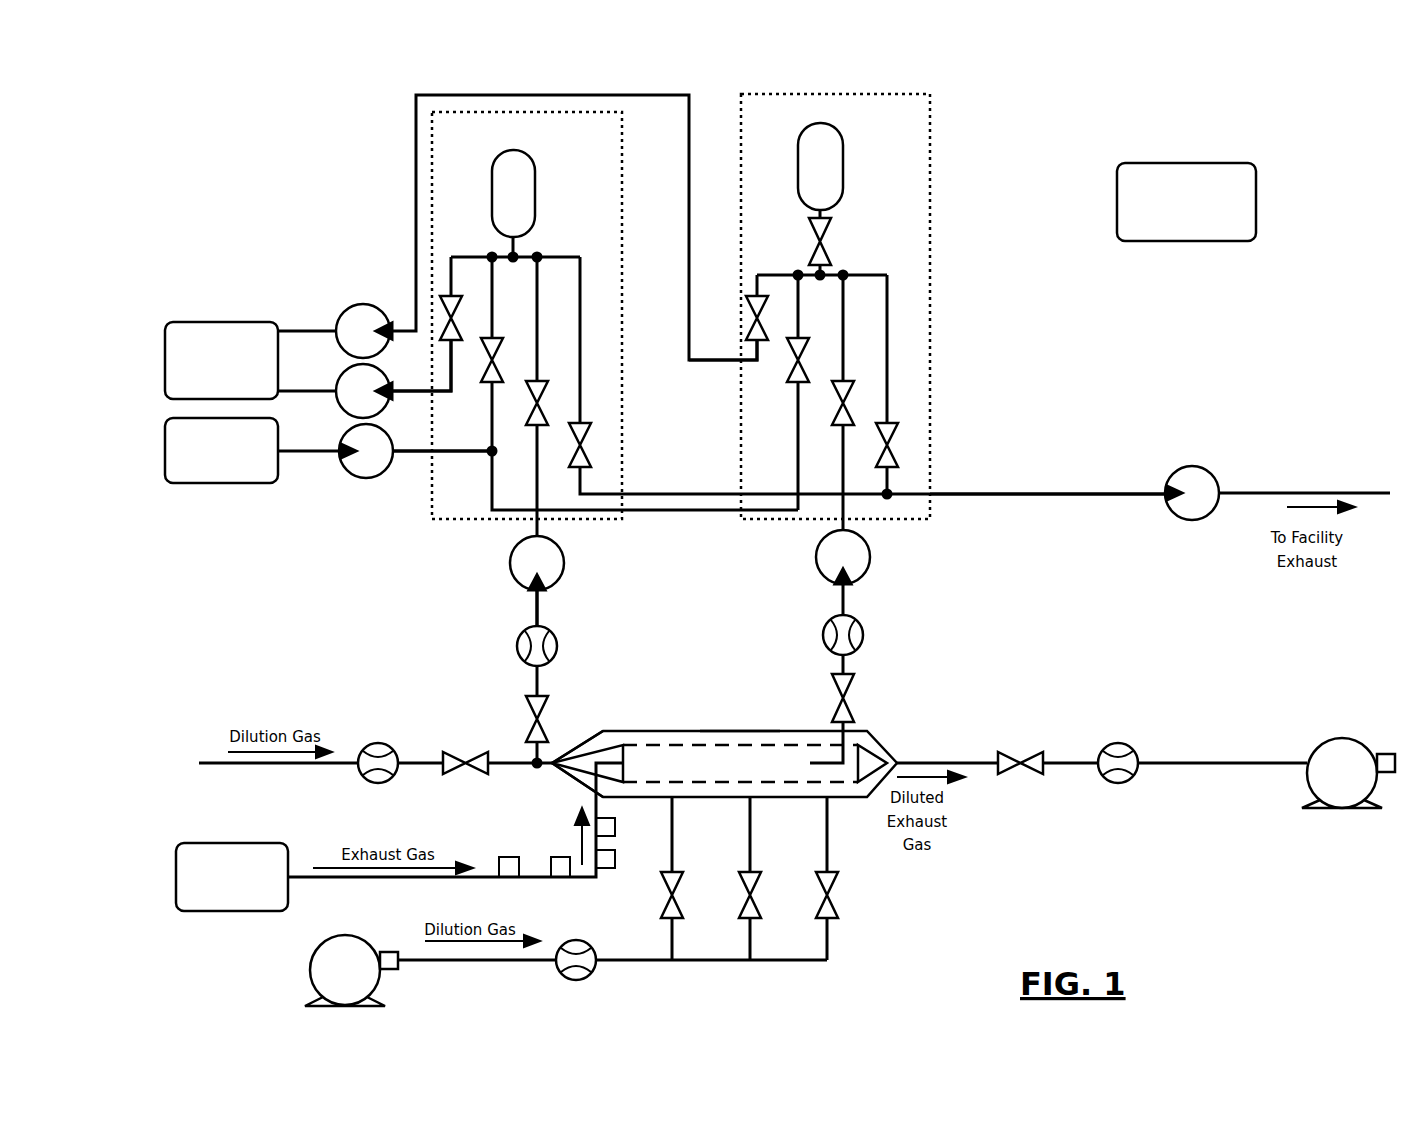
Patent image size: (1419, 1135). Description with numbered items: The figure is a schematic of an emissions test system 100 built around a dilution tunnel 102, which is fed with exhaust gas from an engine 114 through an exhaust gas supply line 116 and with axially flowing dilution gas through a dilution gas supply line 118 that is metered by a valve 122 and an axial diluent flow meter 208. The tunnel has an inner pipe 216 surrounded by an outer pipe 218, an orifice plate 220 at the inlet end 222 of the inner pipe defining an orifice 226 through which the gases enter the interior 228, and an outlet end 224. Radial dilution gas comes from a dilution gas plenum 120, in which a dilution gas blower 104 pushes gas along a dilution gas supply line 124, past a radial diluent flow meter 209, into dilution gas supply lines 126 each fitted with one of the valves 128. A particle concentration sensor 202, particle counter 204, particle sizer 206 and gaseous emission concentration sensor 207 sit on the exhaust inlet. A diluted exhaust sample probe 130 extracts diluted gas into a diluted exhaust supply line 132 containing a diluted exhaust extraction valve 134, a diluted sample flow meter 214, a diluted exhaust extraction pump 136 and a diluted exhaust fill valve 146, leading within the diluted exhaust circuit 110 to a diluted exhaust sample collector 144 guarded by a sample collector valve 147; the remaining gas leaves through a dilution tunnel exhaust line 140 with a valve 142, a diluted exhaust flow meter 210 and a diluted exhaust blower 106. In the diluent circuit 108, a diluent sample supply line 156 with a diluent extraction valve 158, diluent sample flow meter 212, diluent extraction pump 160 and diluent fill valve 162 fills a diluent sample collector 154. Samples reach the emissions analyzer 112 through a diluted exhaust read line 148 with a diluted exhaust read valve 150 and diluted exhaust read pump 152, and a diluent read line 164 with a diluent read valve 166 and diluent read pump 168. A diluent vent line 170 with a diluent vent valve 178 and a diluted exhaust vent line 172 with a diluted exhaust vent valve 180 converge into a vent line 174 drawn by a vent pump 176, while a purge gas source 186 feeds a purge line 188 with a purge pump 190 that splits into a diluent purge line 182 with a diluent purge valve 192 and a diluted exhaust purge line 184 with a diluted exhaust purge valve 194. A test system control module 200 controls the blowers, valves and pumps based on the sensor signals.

The emissions test system 100 is at (242, 116).
The dilution tunnel 102 is at (683, 721).
The dilution gas blower 104 is at (322, 952).
The diluted exhaust blower 106 is at (1320, 749).
The diluent circuit 108 is at (622, 166).
The diluted exhaust circuit 110 is at (930, 166).
The emissions analyzer 112 is at (222, 322).
The engine 114 is at (230, 913).
The exhaust gas supply line 116 is at (386, 880).
The dilution gas supply line 118 is at (297, 766).
The dilution gas plenum 120 is at (935, 872).
The valve 122 is at (460, 769).
The dilution gas supply line 124 is at (490, 964).
The dilution gas supply lines 126 is at (829, 954).
The valves 128 is at (836, 911).
The diluted exhaust sample probe 130 is at (827, 766).
The diluted exhaust supply line 132 is at (848, 606).
The diluted exhaust extraction valve 134 is at (848, 714).
The diluted exhaust extraction pump 136 is at (870, 552).
The dilution tunnel exhaust line 140 is at (1230, 766).
The valve 142 is at (1027, 776).
The diluted exhaust sample collector 144 is at (843, 189).
The diluted exhaust fill valve 146 is at (843, 426).
The sample collector valve 147 is at (812, 252).
The diluted exhaust read line 148 is at (757, 356).
The diluted exhaust read valve 150 is at (757, 331).
The diluted exhaust read pump 152 is at (343, 311).
The diluent sample collector 154 is at (535, 209).
The diluent sample supply line 156 is at (535, 614).
The diluent extraction valve 158 is at (527, 732).
The diluent extraction pump 160 is at (511, 557).
The diluent fill valve 162 is at (534, 426).
The diluent read line 164 is at (450, 368).
The diluent read valve 166 is at (448, 341).
The diluent read pump 168 is at (343, 371).
The diluent vent line 170 is at (580, 481).
The diluted exhaust vent line 172 is at (889, 481).
The vent line 174 is at (1068, 494).
The vent pump 176 is at (1177, 470).
The diluent vent valve 178 is at (586, 456).
The diluted exhaust vent valve 180 is at (893, 456).
The diluent purge line 182 is at (490, 432).
The diluted exhaust purge line 184 is at (797, 432).
The purge gas source 186 is at (222, 487).
The purge line 188 is at (322, 459).
The purge pump 190 is at (346, 434).
The diluent purge valve 192 is at (490, 384).
The diluted exhaust purge valve 194 is at (796, 384).
The test system control module 200 is at (1256, 181).
The particle concentration sensor 202 is at (500, 857).
The particle counter 204 is at (552, 857).
The particle sizer 206 is at (603, 870).
The gaseous emission concentration sensor 207 is at (615, 828).
The axial diluent flow meter 208 is at (385, 784).
The radial diluent flow meter 209 is at (583, 979).
The diluted exhaust flow meter 210 is at (1113, 783).
The diluent sample flow meter 212 is at (517, 651).
The diluted sample flow meter 214 is at (866, 637).
The inner pipe 216 is at (768, 746).
The outer pipe 218 is at (732, 731).
The orifice plate 220 is at (620, 740).
The inlet end 222 is at (604, 746).
The outlet end 224 is at (878, 756).
The orifice 226 is at (624, 772).
The interior 228 is at (741, 784).